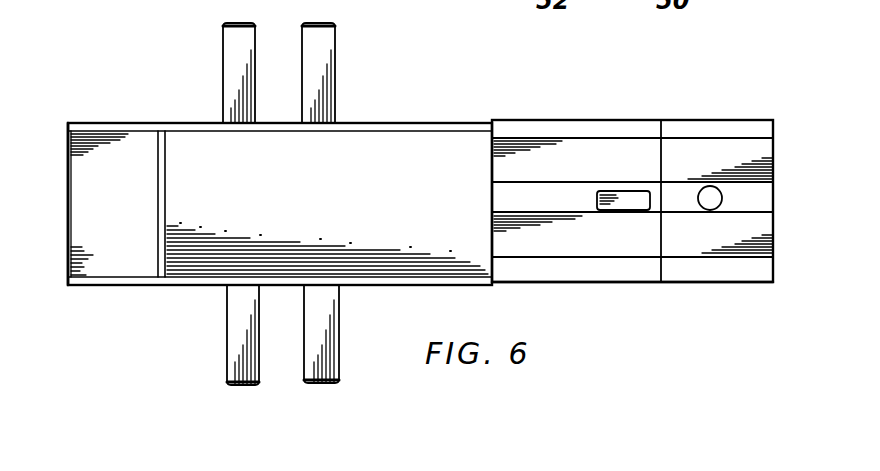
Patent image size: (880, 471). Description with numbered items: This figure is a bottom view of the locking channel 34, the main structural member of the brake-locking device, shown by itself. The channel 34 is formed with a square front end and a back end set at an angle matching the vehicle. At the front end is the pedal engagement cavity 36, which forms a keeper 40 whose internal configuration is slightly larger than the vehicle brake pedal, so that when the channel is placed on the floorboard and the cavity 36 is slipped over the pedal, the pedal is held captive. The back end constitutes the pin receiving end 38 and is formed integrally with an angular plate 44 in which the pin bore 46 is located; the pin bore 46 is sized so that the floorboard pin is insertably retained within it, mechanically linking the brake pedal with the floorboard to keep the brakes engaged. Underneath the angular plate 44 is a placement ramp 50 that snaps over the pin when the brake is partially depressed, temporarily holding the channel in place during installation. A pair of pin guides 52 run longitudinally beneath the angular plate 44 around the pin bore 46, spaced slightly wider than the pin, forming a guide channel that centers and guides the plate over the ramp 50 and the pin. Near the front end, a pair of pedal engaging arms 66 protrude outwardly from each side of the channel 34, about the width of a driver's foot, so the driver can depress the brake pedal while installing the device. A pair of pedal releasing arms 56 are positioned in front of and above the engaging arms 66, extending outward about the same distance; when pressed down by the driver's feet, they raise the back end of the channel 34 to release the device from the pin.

The locking channel 34 is at (452, 122).
The pedal engagement cavity 36 is at (67, 134).
The pin receiving end 38 is at (775, 122).
The keeper 40 is at (124, 286).
The angular plate 44 is at (725, 283).
The pin bore 46 is at (722, 199).
The placement ramp 50 is at (629, 211).
The pin guides 52 is at (570, 137).
The pedal releasing arms 56 is at (223, 68).
The pedal engaging arms 66 is at (332, 55).